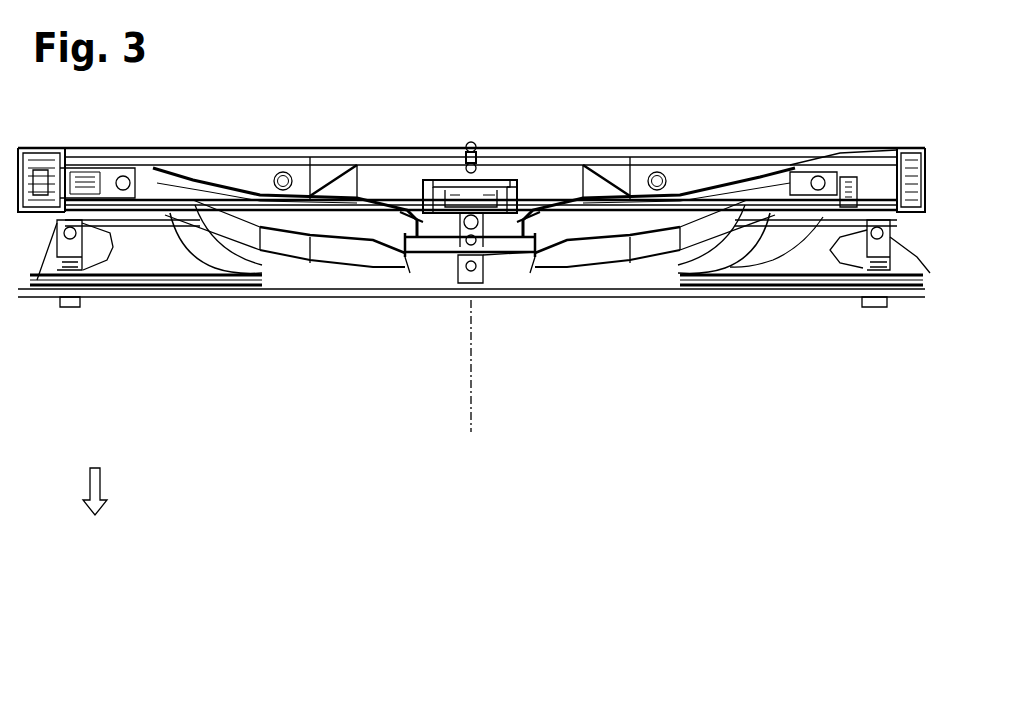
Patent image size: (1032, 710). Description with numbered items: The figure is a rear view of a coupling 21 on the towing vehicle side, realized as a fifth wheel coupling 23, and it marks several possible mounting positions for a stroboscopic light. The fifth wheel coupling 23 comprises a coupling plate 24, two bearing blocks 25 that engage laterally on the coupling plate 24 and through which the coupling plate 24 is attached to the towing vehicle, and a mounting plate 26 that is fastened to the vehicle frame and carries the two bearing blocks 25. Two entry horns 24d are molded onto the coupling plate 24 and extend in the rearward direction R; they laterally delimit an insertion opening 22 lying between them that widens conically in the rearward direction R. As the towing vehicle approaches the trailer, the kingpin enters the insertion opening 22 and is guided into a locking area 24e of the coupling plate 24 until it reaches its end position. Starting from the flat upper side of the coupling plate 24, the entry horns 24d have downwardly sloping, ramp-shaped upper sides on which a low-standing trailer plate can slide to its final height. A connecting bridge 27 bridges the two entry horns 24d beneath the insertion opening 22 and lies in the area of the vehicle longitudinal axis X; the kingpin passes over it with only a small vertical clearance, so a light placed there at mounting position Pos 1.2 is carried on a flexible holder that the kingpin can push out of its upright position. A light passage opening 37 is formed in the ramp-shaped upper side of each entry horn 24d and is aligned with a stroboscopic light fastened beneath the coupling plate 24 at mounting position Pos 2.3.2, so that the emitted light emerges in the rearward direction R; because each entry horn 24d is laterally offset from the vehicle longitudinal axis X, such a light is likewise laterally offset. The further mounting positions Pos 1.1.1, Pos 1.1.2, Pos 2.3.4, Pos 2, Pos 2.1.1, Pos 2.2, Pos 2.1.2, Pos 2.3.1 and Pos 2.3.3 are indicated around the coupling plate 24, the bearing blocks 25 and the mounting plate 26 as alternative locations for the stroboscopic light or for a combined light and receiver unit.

The coupling 21 is at (471, 365).
The fifth wheel coupling 23 is at (471, 222).
The coupling plate 24 is at (347, 147).
The entry horns 24d is at (250, 197).
The locking area 24e is at (420, 200).
The insertion opening 22 is at (420, 197).
The bearing blocks 25 is at (130, 253).
The mounting plate 26 is at (193, 263).
The connecting bridge 27 is at (485, 283).
The light passage opening 37 is at (262, 180).
The mounting position Pos 2 is at (410, 260).
The mounting position Pos 2.2 is at (466, 227).
The mounting position Pos 1.2 is at (490, 240).
The mounting position Pos 1.1.1 is at (503, 165).
The mounting position Pos 1.1.2 is at (520, 240).
The mounting position Pos 2.1.1 is at (930, 273).
The mounting position Pos 2.1.2 is at (857, 250).
The mounting position Pos 2.3.1 is at (825, 147).
The mounting position Pos 2.3.2 is at (663, 176).
The mounting position Pos 2.3.3 is at (283, 171).
The mounting position Pos 2.3.4 is at (462, 135).
The vehicle longitudinal axis X is at (471, 397).
The rearward direction R is at (106, 491).